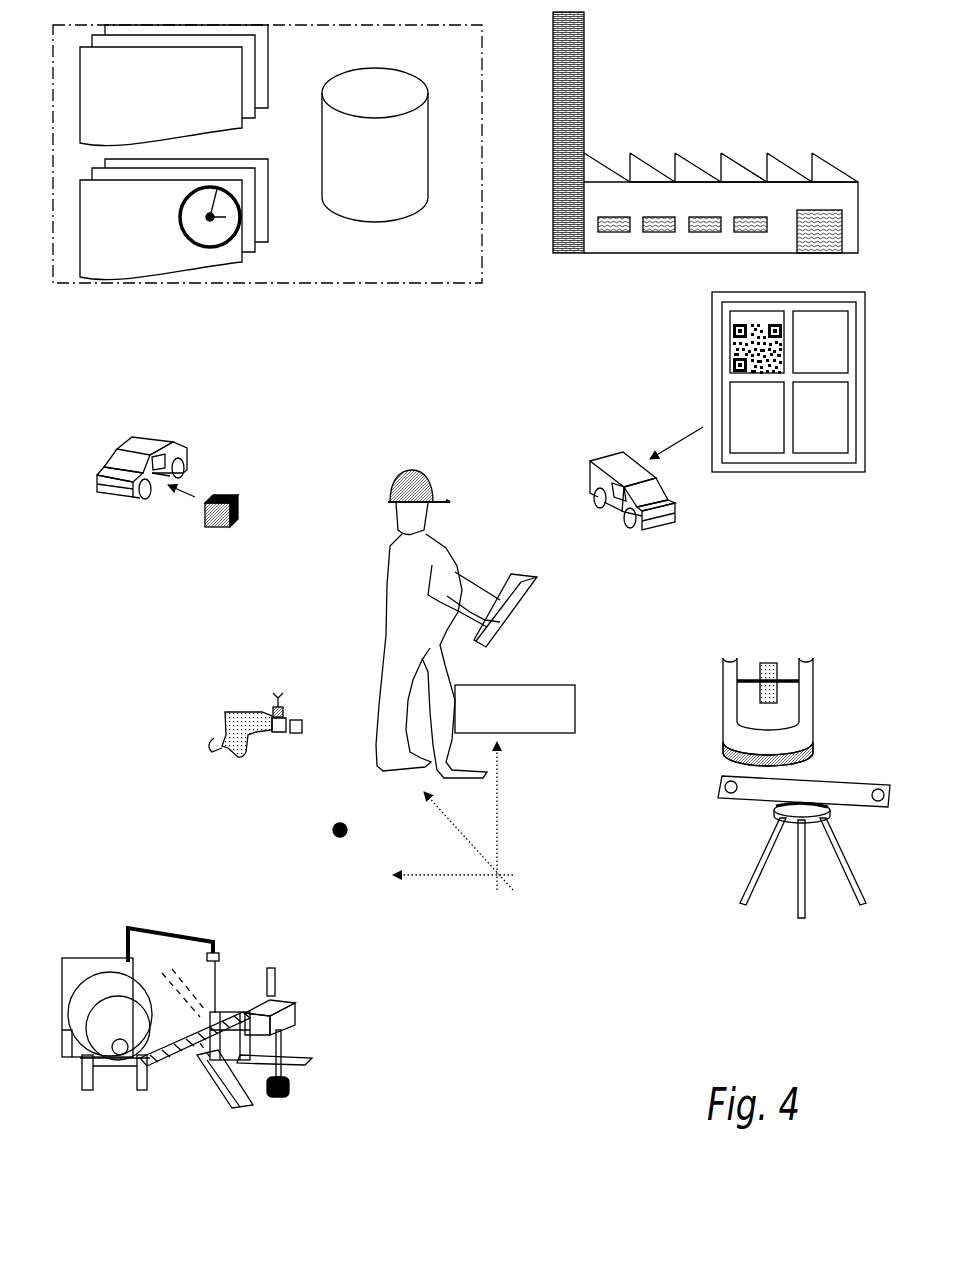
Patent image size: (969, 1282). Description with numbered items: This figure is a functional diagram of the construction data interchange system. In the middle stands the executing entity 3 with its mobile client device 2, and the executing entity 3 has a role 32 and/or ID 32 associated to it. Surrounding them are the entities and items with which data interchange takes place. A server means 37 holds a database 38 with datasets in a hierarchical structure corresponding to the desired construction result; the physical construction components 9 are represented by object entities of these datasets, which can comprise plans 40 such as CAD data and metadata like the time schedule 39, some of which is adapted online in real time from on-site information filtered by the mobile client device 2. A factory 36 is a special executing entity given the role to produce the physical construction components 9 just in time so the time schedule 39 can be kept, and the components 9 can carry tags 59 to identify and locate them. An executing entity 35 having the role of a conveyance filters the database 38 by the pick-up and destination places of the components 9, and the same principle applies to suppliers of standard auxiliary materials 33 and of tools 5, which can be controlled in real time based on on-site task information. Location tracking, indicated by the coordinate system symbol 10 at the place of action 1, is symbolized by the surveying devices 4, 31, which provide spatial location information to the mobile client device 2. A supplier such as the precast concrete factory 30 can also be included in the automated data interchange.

The place of action 1 is at (336, 827).
The mobile client device 2 is at (503, 625).
The executing entity 3 is at (428, 552).
The surveying device 4 is at (760, 663).
The tool 5 is at (223, 742).
The physical construction component 9 is at (730, 403).
The coordinate system symbol 10 is at (497, 875).
The precast concrete factory 30 is at (230, 1012).
The surveying device 31 is at (757, 792).
The role and/or ID 32 is at (490, 690).
The standard auxiliary materials 33 is at (176, 467).
The executing entity having the role of a conveyance 35 is at (612, 465).
The factory 36 is at (568, 132).
The server means 37 is at (480, 227).
The database 38 is at (418, 127).
The time schedule 39 is at (148, 235).
The plans 40 is at (235, 90).
The tag 59 is at (737, 350).